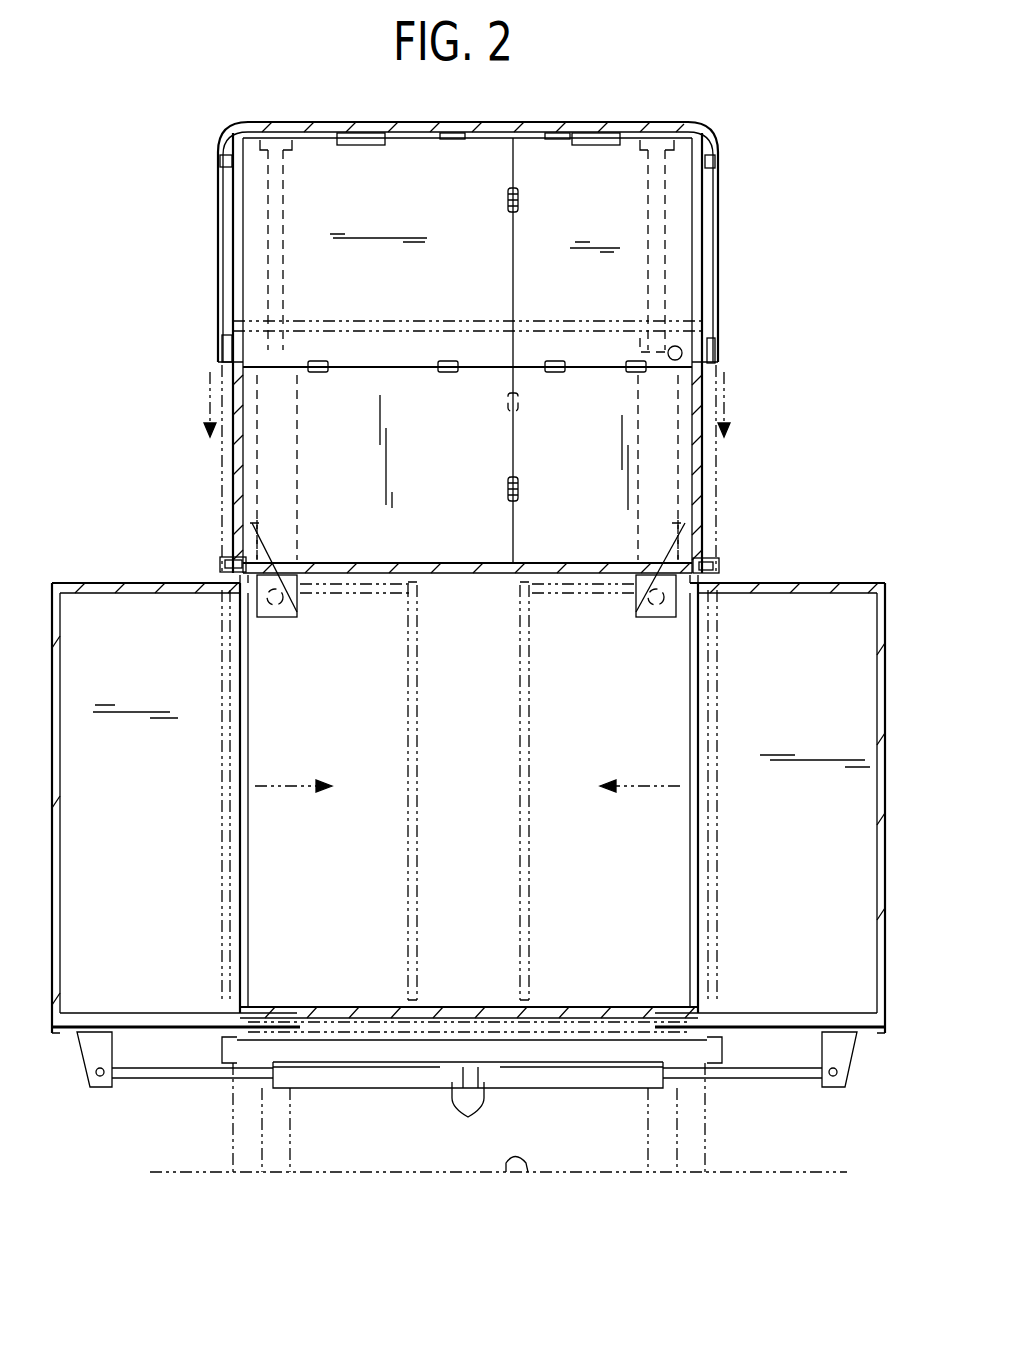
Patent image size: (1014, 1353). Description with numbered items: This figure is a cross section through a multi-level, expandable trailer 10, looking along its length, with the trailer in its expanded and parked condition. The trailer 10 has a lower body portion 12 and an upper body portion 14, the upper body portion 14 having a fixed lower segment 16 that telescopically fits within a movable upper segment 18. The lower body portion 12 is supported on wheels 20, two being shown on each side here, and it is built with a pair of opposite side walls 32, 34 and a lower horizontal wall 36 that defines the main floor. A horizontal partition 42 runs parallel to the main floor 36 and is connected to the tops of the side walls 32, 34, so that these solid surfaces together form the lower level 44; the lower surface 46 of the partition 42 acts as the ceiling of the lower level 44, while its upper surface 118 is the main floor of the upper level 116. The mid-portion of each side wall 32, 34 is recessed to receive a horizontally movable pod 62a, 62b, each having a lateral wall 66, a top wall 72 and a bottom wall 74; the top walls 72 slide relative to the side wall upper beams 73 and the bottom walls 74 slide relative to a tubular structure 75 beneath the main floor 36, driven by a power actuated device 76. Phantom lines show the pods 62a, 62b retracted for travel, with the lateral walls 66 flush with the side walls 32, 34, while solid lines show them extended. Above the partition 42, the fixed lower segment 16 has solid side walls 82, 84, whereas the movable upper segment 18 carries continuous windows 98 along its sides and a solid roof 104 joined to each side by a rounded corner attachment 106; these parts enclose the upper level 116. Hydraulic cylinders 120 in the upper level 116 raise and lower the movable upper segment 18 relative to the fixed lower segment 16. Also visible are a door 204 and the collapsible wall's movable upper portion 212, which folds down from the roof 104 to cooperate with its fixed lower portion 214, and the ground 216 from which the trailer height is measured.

The multi-level, expandable trailer 10 is at (744, 102).
The lower body portion 12 is at (892, 680).
The upper body portion 14 is at (740, 385).
The fixed lower segment 16 is at (725, 484).
The movable upper segment 18 is at (732, 210).
The wheels 20 is at (282, 1148).
The side wall 32 is at (688, 750).
The side wall 34 is at (247, 768).
The lower horizontal wall 36 is at (320, 1010).
The horizontal partition 42 is at (438, 556).
The lower level 44 is at (458, 848).
The lower surface 46 is at (497, 576).
The horizontally movable pod 62a is at (887, 603).
The horizontally movable pod 62b is at (50, 712).
The lateral wall 66 is at (62, 880).
The top wall 72 is at (190, 597).
The side wall upper beams 73 is at (226, 560).
The bottom wall 74 is at (132, 1015).
The tubular structure 75 is at (590, 1020).
The power actuated device 76 is at (472, 1093).
The side wall 82 is at (715, 512).
The side wall 84 is at (237, 500).
The continuous windows 98 is at (218, 244).
The solid roof 104 is at (500, 128).
The rounded corner attachment 106 is at (234, 128).
The upper level 116 is at (422, 447).
The upper surface 118 is at (320, 560).
The hydraulic cylinders 120 is at (287, 430).
The door 204 is at (627, 178).
The movable upper portion 212 is at (487, 304).
The fixed lower portion 214 is at (487, 523).
The ground 216 is at (512, 1172).